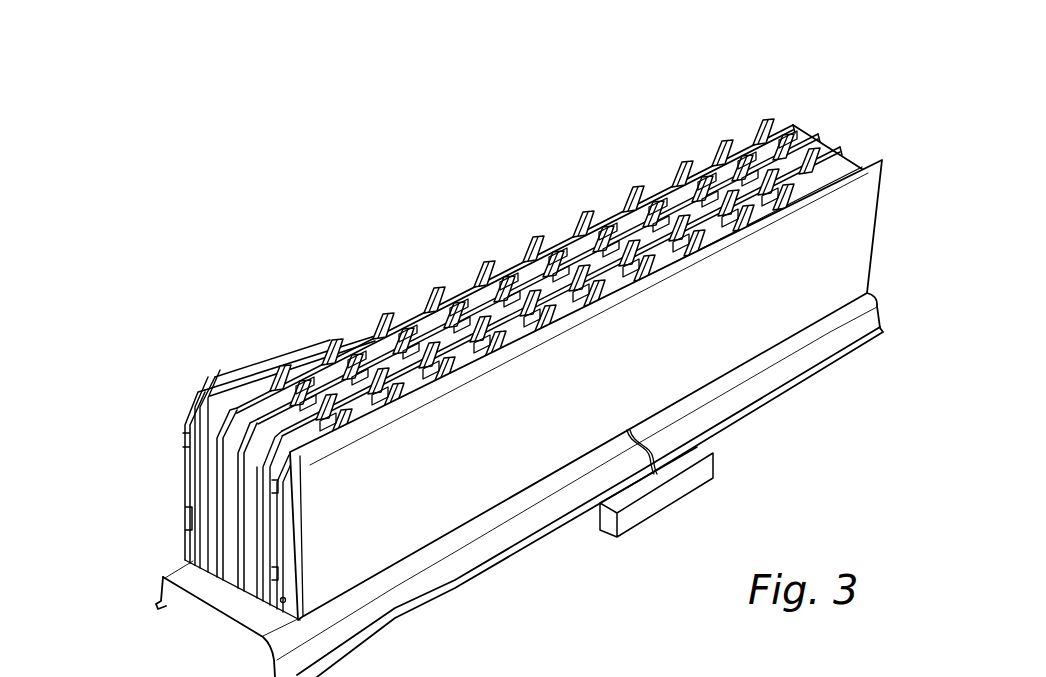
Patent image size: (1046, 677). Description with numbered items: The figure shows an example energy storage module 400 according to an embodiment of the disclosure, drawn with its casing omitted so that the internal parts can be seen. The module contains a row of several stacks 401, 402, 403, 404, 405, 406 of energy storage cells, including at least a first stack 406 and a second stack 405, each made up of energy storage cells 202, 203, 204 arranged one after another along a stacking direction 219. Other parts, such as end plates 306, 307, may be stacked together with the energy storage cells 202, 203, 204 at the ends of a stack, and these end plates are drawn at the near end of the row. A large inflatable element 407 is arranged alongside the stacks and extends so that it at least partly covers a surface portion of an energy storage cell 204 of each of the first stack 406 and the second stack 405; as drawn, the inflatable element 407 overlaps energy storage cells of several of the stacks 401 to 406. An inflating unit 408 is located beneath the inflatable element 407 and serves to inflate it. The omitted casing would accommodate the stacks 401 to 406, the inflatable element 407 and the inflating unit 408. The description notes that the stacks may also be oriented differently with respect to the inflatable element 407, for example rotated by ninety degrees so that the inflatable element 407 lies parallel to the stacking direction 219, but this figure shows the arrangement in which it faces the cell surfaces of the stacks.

The energy storage module 400 is at (382, 100).
The stack of energy storage cells 401 is at (745, 80).
The stack of energy storage cells 402 is at (662, 150).
The stack of energy storage cells 403 is at (552, 194).
The stack of energy storage cells 404 is at (444, 233).
The second stack of energy storage cells 405 is at (354, 297).
The first stack of energy storage cells 406 is at (238, 328).
The inflatable element 407 is at (457, 510).
The inflating unit 408 is at (677, 490).
The energy storage cell 202 is at (228, 384).
The energy storage cell 203 is at (306, 375).
The energy storage cell 204 is at (336, 380).
The stacking direction 219 is at (348, 525).
The end plate 306 is at (280, 518).
The end plate 307 is at (186, 460).